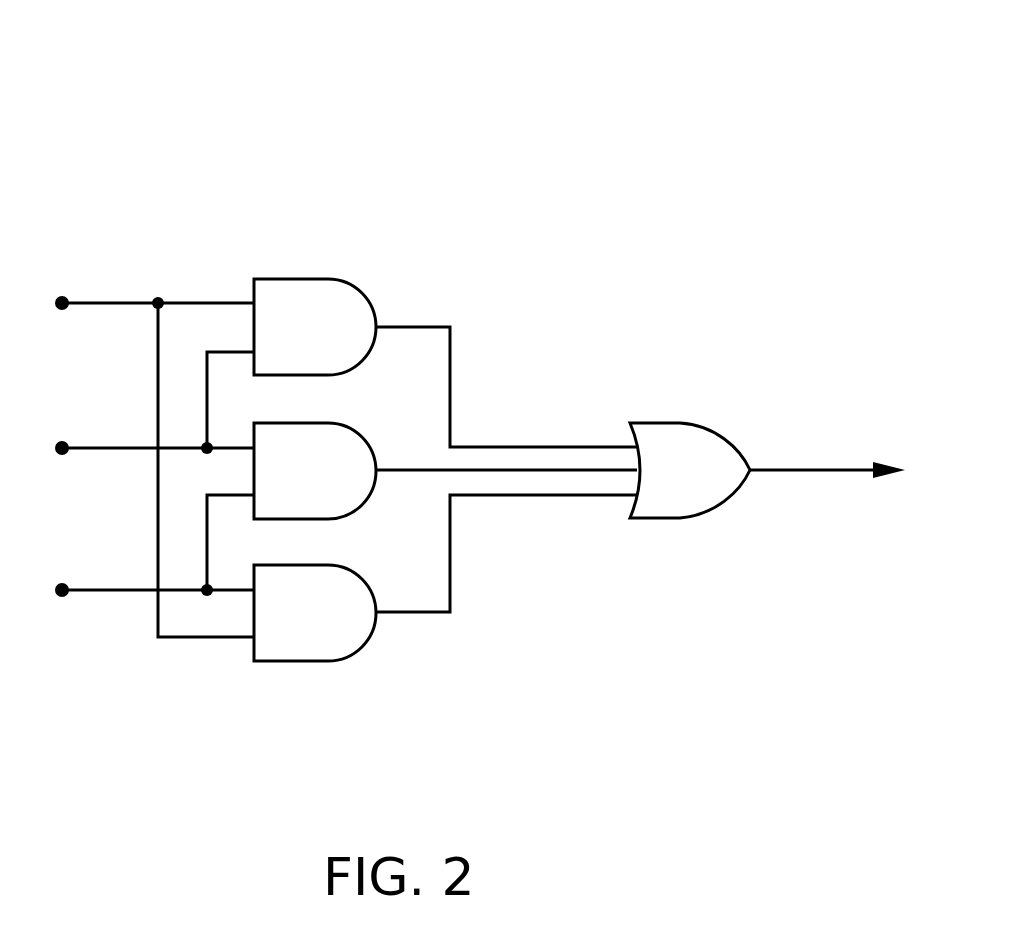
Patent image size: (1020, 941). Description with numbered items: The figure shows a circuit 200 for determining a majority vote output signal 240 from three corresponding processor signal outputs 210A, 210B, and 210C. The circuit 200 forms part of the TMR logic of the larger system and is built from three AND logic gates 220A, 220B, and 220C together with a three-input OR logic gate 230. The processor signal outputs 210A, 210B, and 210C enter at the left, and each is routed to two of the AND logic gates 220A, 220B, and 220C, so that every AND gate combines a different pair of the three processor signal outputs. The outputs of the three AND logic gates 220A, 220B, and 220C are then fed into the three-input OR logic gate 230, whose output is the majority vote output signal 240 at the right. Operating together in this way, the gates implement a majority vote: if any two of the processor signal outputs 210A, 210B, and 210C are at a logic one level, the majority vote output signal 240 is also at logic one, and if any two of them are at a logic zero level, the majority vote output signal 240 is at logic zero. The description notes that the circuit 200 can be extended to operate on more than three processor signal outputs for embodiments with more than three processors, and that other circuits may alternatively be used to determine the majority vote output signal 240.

The circuit 200 is at (411, 98).
The processor signal output 210A is at (147, 458).
The processor signal output 210B is at (147, 403).
The processor signal output 210C is at (147, 546).
The AND logic gate 220A is at (445, 363).
The AND logic gate 220B is at (445, 471).
The AND logic gate 220C is at (445, 578).
The three-input OR logic gate 230 is at (690, 470).
The majority vote output signal 240 is at (828, 460).